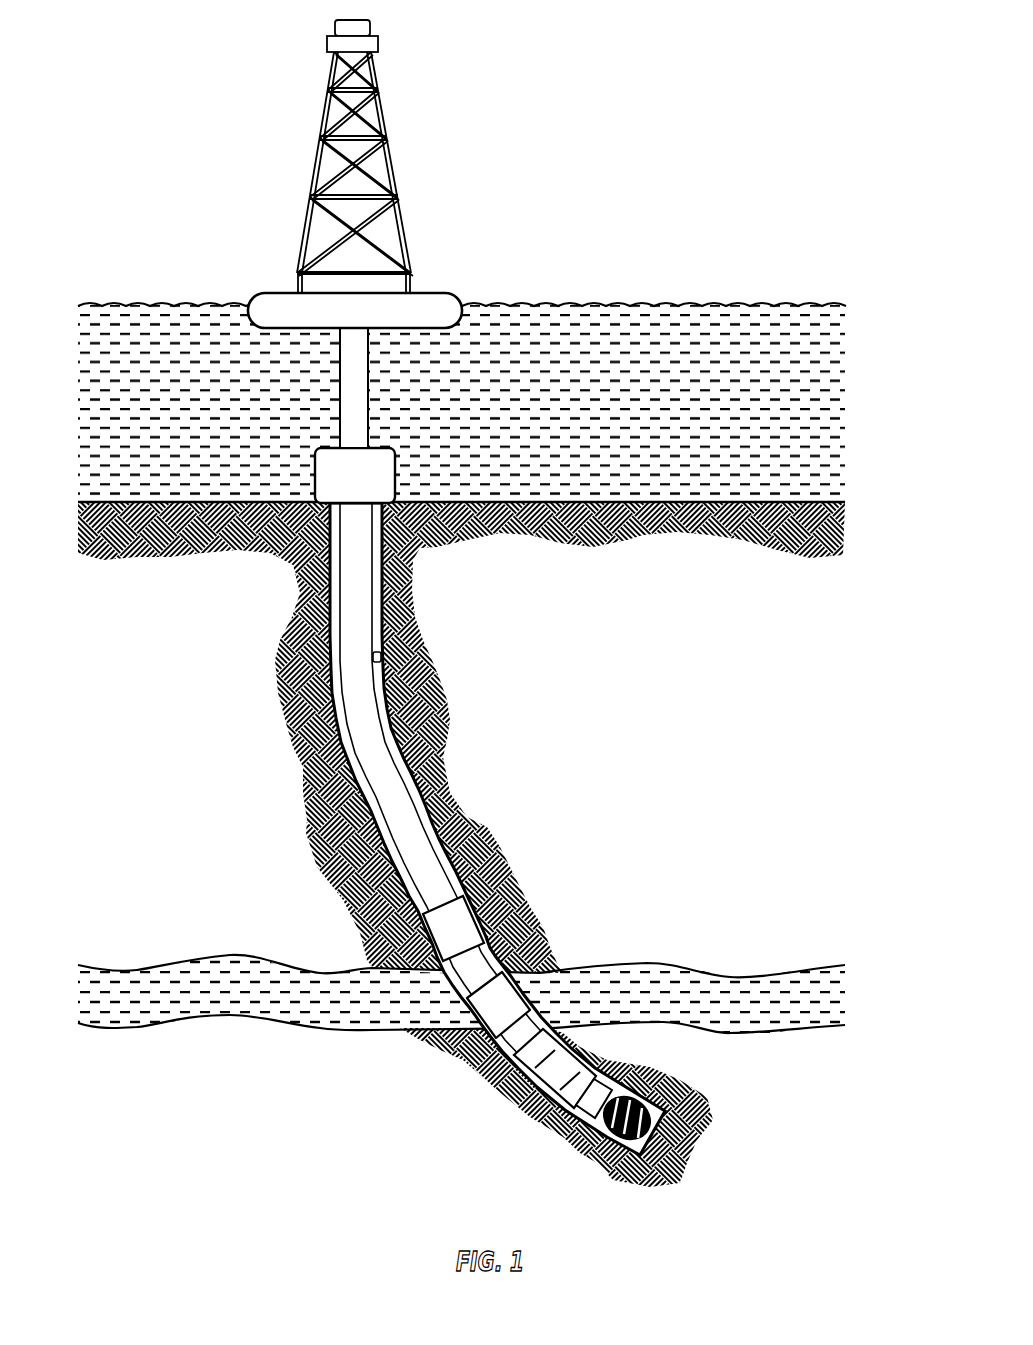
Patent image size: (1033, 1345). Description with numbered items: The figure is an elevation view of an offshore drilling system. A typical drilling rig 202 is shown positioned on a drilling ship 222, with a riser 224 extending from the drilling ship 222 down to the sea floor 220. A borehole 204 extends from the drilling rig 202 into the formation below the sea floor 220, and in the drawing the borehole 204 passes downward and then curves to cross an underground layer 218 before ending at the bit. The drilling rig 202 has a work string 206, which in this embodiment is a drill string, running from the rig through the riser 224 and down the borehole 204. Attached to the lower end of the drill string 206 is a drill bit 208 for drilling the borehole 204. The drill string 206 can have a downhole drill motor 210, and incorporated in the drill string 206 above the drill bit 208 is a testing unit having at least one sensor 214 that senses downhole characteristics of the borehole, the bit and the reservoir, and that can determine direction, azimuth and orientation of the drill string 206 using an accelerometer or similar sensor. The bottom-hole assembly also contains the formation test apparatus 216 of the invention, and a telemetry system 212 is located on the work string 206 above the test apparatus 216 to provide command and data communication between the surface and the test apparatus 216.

The drilling rig 202 is at (398, 200).
The drilling ship 222 is at (430, 293).
The riser 224 is at (371, 405).
The sea floor 220 is at (600, 500).
The work string 206 is at (357, 617).
The borehole 204 is at (380, 656).
The telemetry system 212 is at (443, 915).
The fluid-bearing formation layer 218 is at (193, 983).
The formation test apparatus 216 is at (477, 1018).
The sensor 214 is at (520, 1116).
The downhole drill motor 210 is at (559, 1111).
The drill bit 208 is at (600, 1160).